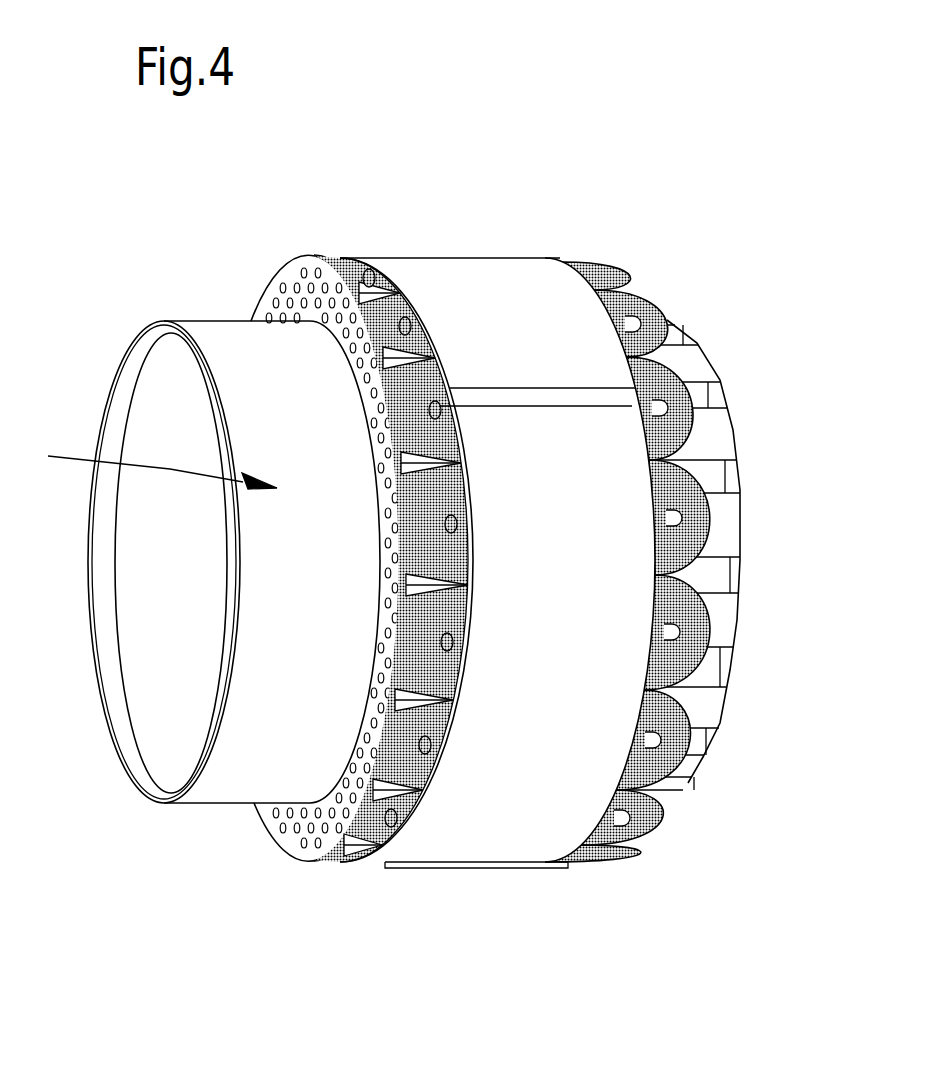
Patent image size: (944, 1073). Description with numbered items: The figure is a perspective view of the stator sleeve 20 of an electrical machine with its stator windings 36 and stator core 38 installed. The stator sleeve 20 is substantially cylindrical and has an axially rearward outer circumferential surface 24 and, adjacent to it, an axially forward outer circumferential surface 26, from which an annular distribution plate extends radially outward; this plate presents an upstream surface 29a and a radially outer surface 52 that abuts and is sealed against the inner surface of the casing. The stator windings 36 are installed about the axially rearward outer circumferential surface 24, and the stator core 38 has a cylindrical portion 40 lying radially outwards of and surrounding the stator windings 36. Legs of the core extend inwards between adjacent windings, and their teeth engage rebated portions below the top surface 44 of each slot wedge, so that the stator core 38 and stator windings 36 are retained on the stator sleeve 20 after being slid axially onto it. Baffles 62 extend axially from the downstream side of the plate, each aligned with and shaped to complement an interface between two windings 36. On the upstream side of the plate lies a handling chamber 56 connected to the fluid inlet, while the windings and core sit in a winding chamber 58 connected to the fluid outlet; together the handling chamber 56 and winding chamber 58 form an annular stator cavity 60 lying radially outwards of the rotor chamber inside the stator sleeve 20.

The stator sleeve 20 is at (258, 758).
The axially forward outer circumferential surface 26 is at (263, 378).
The handling chamber 56 is at (296, 606).
The stator cavity 60 is at (144, 462).
The upstream surface 29a is at (276, 280).
The radially outer surface 52 is at (363, 263).
The baffle 62 is at (372, 836).
The axially rearward outer circumferential surface 24 is at (708, 470).
The top surface 44 is at (705, 572).
The winding chamber 58 is at (705, 702).
The stator windings 36 is at (636, 295).
The stator core 38 is at (468, 277).
The cylindrical portion 40 is at (538, 808).